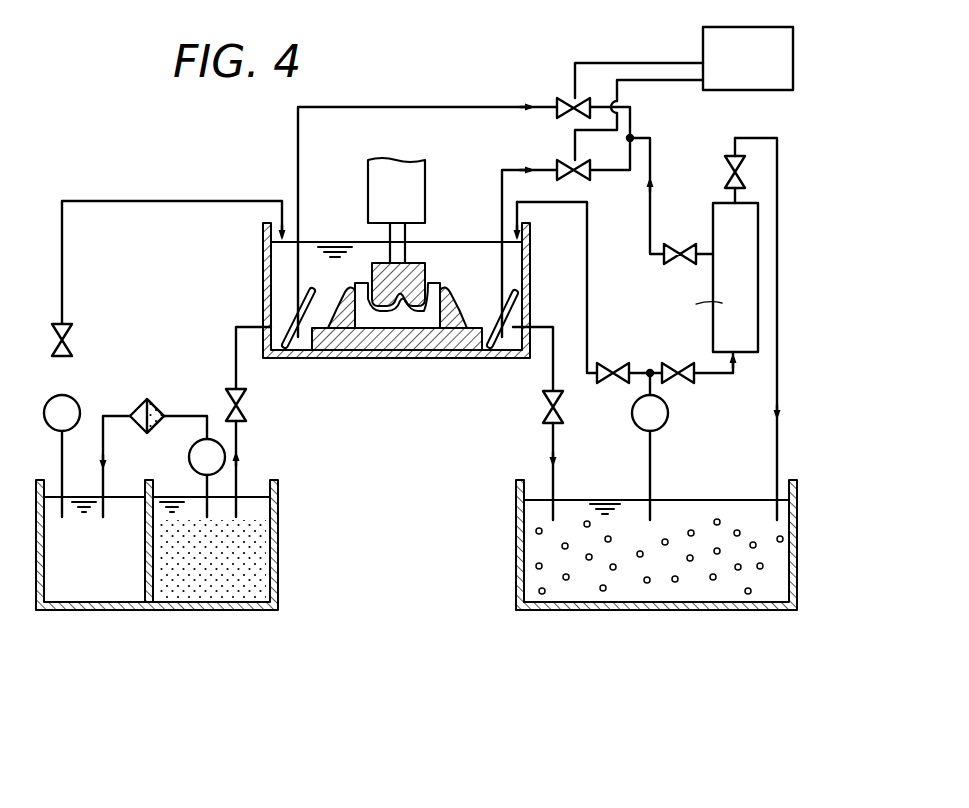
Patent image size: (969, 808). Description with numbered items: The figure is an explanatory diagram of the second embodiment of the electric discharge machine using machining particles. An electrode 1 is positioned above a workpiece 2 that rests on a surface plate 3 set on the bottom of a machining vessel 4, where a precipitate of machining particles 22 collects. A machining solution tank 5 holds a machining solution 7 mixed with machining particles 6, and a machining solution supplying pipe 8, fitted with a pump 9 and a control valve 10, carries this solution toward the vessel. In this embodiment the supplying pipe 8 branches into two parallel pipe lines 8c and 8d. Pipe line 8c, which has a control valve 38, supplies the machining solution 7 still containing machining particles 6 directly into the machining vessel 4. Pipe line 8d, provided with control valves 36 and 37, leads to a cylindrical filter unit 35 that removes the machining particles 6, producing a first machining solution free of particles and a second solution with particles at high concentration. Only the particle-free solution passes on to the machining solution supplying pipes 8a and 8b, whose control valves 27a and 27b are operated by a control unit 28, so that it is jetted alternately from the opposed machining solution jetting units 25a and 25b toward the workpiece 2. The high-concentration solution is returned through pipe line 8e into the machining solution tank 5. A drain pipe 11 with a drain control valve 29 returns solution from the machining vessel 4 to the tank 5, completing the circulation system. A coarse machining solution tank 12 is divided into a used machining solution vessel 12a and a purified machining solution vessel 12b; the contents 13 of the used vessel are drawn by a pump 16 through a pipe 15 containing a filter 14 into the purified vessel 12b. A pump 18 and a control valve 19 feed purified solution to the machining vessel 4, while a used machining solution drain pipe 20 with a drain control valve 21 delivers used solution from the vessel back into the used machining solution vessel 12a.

The electrode 1 is at (368, 320).
The workpiece 2 is at (396, 322).
The surface plate 3 is at (432, 350).
The machining vessel 4 is at (467, 350).
The machining solution tank 5 is at (553, 610).
The machining particles 6 is at (605, 592).
The machining solution 7 is at (60, 270).
The machining solution supplying pipe 8 is at (652, 462).
The machining solution supplying pipe 8a is at (515, 167).
The machining solution supplying pipe 8b is at (483, 107).
The pipe line 8c is at (587, 272).
The pipe line 8d is at (648, 197).
The pipe line 8e is at (777, 213).
The pump 9 is at (668, 414).
The control valve 10 is at (612, 362).
The drain pipe 11 is at (556, 345).
The coarse machining solution tank 12 is at (162, 605).
The used machining solution vessel 12a is at (240, 592).
The purified machining solution vessel 12b is at (98, 587).
The abrasive liquid 13 is at (265, 535).
The filter 14 is at (150, 397).
The pipe 15 is at (190, 414).
The pump 16 is at (189, 457).
The pump 18 is at (79, 404).
The control valve 19 is at (70, 333).
The used machining solution drain pipe 20 is at (240, 450).
The drain control valve 21 is at (249, 405).
The precipitate of machining particles 22 is at (458, 303).
The machining solution jetting unit 25a is at (507, 357).
The machining solution jetting unit 25b is at (303, 357).
The control valve 27a is at (582, 170).
The control valve 27b is at (566, 98).
The control unit 28 is at (760, 91).
The drain control valve 29 is at (568, 407).
The filter unit 35 is at (758, 290).
The control valve 36 is at (678, 363).
The control valve 37 is at (680, 245).
The control valve 38 is at (725, 165).